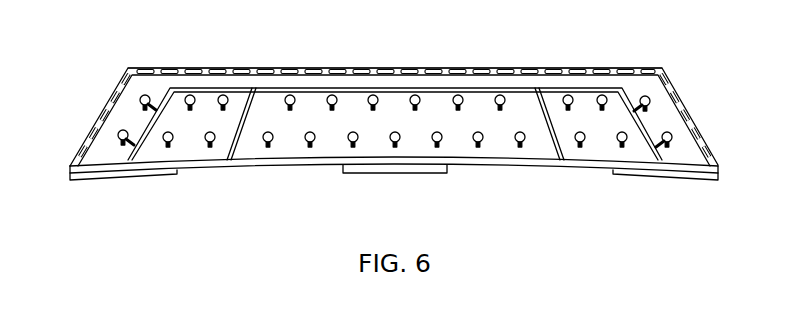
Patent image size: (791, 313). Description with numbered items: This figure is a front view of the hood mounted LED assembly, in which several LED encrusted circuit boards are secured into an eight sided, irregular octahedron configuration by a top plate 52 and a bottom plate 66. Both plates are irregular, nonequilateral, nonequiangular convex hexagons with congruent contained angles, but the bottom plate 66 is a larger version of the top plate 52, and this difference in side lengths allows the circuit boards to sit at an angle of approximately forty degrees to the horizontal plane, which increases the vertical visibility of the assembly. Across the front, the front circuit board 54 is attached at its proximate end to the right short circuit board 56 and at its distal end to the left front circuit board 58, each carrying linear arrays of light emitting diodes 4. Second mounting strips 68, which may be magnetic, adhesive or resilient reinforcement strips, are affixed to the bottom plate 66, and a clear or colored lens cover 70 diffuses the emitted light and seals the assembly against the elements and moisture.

The light emitting diode 4 is at (305, 138).
The top plate 52 is at (437, 90).
The front circuit board 54 is at (458, 148).
The right short circuit board 56 is at (633, 150).
The left front circuit board 58 is at (193, 150).
The bottom plate 66 is at (587, 166).
The second mounting strips 68 is at (93, 178).
The lens cover 70 is at (595, 68).